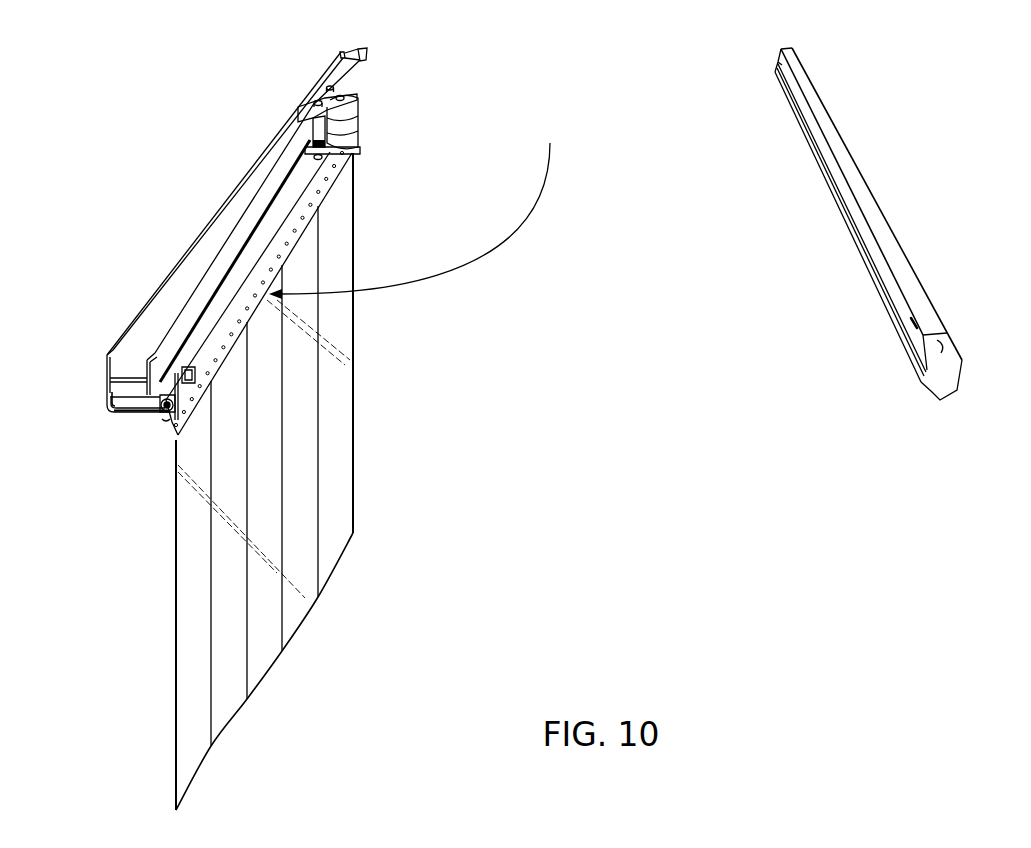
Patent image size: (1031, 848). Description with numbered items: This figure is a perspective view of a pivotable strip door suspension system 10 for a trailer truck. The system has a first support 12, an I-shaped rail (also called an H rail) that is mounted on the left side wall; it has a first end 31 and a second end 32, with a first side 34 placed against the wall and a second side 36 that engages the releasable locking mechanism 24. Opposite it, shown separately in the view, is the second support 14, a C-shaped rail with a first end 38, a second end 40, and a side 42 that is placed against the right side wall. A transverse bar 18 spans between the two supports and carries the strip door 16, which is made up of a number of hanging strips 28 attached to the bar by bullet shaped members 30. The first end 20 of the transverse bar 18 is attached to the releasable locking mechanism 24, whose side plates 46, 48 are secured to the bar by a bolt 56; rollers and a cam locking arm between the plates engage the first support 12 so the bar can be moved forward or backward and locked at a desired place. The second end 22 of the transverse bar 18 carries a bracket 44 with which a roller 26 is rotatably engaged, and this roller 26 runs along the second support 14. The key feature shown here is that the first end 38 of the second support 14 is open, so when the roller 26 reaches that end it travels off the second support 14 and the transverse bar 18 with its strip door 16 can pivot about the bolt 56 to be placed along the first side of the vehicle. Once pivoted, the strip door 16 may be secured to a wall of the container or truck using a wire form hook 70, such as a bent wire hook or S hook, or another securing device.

The moveable strip door suspension system 10 is at (101, 130).
The first support 12 is at (158, 294).
The second support 14 is at (907, 277).
The strip door 16 is at (355, 325).
The transverse bar 18 is at (219, 350).
The first end 20 is at (323, 170).
The second end 22 is at (246, 312).
The releasable locking mechanism 24 is at (300, 99).
The roller 26 is at (166, 413).
The strips 28 is at (346, 462).
The bullet shaped members 30 is at (295, 230).
The first end 31 is at (118, 400).
The second end 32 is at (340, 52).
The first side 34 is at (107, 357).
The second side 36 is at (167, 358).
The first end 38 is at (963, 377).
The second end 40 is at (793, 48).
The side 42 is at (953, 330).
The bracket 44 is at (188, 366).
The side plate 46 is at (312, 97).
The side plate 48 is at (350, 152).
The bolt 56 is at (366, 50).
The wire form hook 70 is at (110, 410).